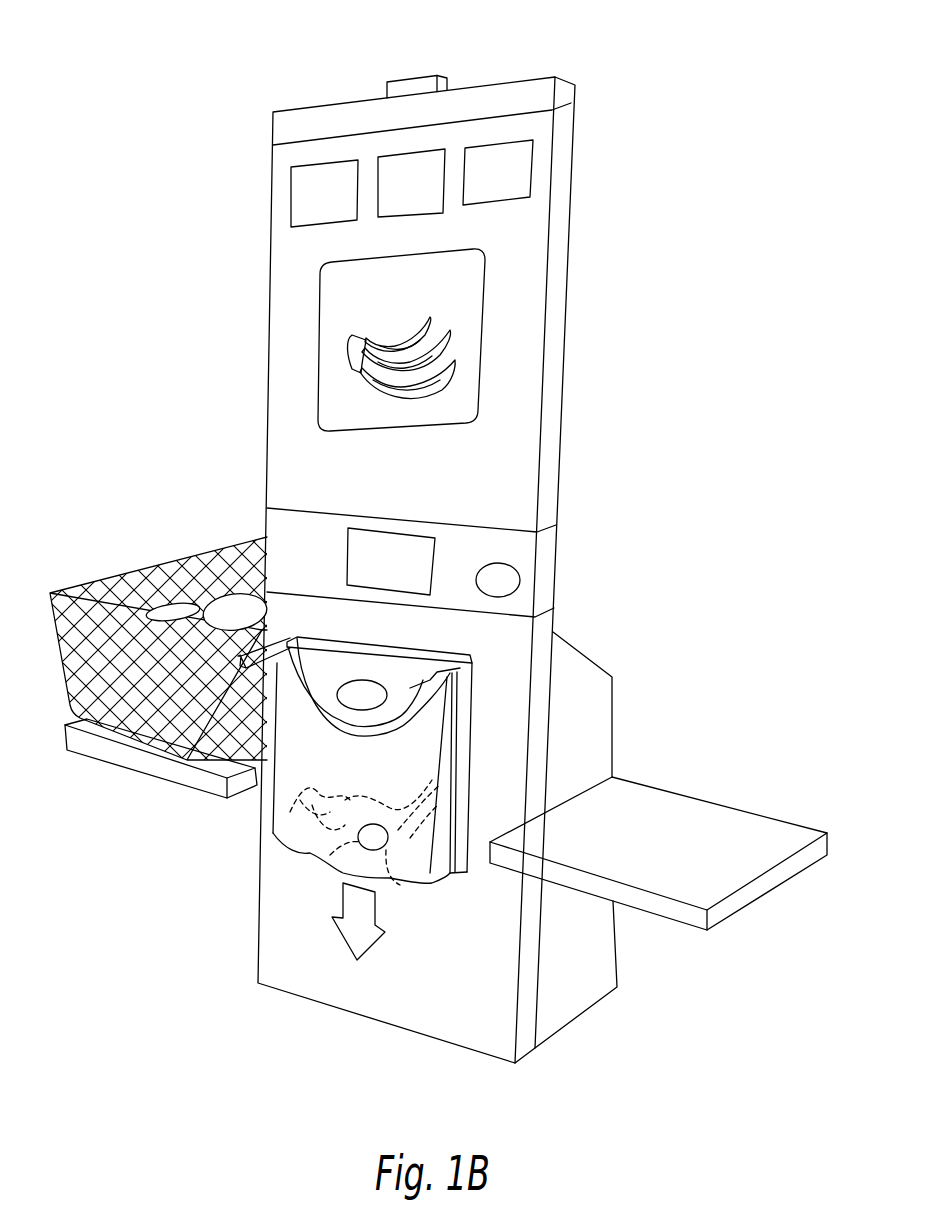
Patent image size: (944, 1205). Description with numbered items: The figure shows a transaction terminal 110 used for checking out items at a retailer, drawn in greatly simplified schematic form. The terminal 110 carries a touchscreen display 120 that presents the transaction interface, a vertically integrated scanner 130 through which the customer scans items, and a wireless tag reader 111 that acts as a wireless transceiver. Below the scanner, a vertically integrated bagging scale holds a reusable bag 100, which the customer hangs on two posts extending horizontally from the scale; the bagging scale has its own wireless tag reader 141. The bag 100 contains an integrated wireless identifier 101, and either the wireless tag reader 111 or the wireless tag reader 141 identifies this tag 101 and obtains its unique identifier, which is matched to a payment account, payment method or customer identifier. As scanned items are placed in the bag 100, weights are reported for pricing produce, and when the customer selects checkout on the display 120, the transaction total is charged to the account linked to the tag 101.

The transaction terminal 110 is at (425, 539).
The display 120 is at (548, 505).
The vertically integrated scanner 130 is at (385, 557).
The wireless tag reader 111 is at (498, 580).
The wireless tag reader 141 is at (362, 695).
The reusable bag 100 is at (428, 806).
The wireless identifier 101 is at (373, 840).